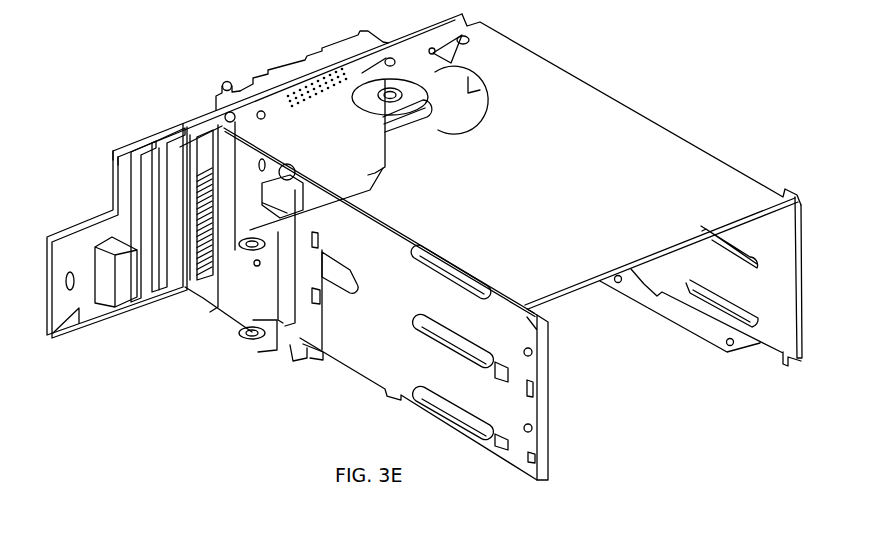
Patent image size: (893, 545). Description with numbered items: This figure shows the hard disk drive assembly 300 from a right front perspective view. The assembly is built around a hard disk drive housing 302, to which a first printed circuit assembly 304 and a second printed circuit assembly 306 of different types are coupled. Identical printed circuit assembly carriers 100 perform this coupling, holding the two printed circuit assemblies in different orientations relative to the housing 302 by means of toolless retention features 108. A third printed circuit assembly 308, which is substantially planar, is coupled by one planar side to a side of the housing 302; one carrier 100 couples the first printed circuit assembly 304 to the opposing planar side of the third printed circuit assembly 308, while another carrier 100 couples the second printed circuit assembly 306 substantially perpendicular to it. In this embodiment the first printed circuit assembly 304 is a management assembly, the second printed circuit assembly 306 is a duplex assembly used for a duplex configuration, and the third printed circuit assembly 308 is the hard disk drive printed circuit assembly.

The hard disk drive assembly 300 is at (670, 50).
The hard disk drive housing 302 is at (702, 152).
The first printed circuit assembly 304 is at (297, 65).
The printed circuit assembly carrier 100 is at (338, 50).
The toolless retention feature 108 is at (220, 85).
The third printed circuit assembly 308 is at (158, 132).
The second printed circuit assembly 306 is at (242, 303).